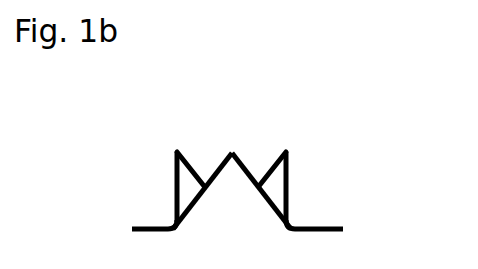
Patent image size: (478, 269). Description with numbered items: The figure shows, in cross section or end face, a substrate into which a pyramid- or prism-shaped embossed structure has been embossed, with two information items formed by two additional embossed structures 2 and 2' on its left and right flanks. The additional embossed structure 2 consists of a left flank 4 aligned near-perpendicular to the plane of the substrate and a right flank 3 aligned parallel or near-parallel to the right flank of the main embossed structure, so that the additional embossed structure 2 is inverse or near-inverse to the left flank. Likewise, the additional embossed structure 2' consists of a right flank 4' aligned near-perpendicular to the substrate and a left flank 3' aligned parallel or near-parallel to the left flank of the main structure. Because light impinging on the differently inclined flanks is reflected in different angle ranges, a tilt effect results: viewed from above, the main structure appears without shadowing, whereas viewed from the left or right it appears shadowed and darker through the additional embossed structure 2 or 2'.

The additional embossed structure 2 is at (155, 151).
The additional embossed structure 2' is at (339, 156).
The right flank 3 is at (202, 153).
The left flank 3' is at (261, 153).
The left flank 4 is at (127, 189).
The right flank 4' is at (339, 186).